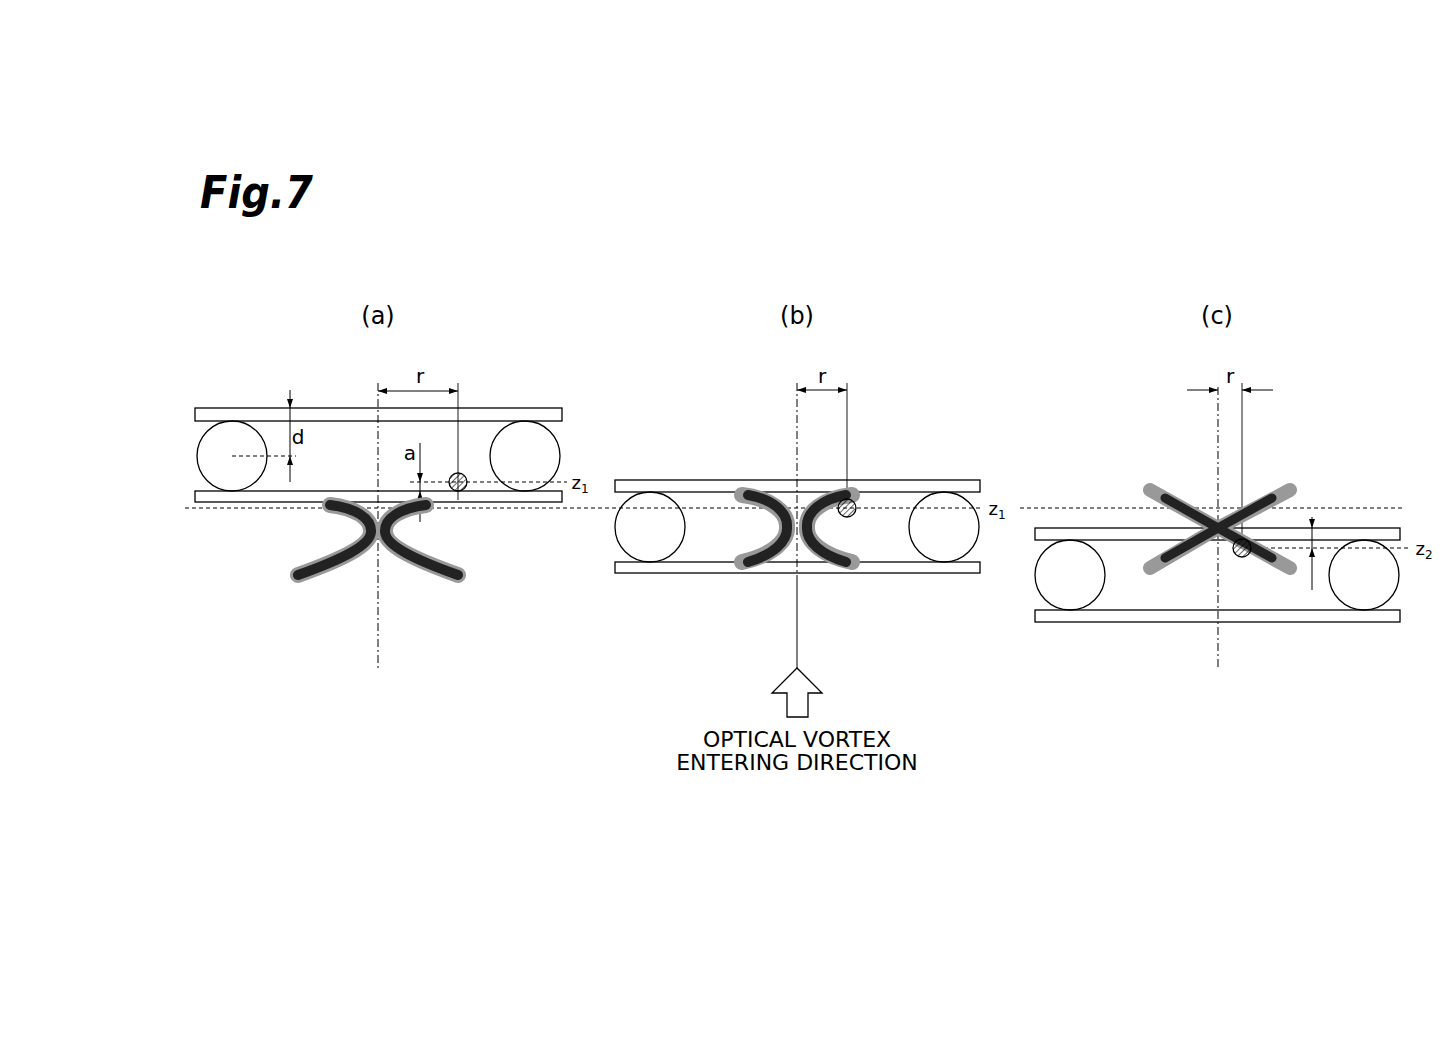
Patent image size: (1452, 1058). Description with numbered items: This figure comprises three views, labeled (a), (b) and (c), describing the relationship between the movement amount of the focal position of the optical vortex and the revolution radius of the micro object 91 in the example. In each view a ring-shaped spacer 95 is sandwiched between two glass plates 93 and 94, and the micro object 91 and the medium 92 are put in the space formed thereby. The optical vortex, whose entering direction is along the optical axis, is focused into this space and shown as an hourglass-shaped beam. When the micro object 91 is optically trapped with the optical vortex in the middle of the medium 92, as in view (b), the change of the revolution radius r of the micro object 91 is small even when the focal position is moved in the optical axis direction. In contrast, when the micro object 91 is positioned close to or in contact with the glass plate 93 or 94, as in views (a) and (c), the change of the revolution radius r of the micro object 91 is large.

The micro object 91 is at (464, 488).
The medium 92 is at (337, 453).
The glass plate 93 is at (230, 498).
The glass plate 94 is at (230, 415).
The ring-shaped spacer 95 is at (206, 461).